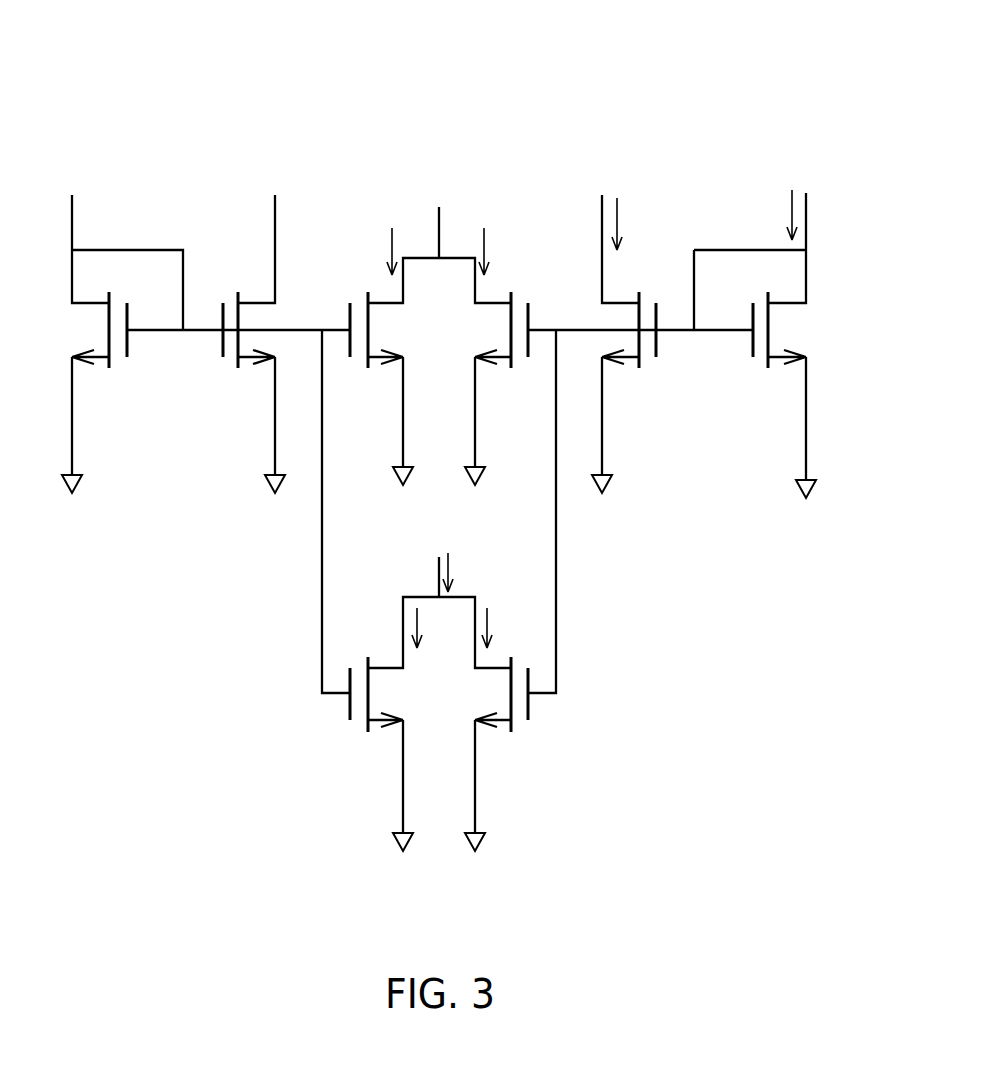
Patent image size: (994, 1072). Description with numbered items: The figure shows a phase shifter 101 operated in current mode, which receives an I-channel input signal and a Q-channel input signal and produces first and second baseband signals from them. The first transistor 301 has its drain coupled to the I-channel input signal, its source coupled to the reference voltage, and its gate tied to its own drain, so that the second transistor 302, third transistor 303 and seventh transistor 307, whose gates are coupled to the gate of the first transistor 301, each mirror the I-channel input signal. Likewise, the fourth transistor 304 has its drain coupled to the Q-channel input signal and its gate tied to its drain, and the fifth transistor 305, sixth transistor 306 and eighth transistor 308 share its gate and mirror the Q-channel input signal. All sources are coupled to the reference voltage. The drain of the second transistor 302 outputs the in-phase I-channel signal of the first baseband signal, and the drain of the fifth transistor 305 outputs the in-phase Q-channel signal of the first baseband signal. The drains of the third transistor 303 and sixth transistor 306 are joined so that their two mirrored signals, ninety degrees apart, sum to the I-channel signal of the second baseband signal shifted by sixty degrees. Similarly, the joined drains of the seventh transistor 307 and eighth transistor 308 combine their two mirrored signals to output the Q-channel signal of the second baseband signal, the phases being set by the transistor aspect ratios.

The phase shifter 101 is at (714, 96).
The first transistor 301 is at (112, 340).
The second transistor 302 is at (263, 326).
The third transistor 303 is at (400, 329).
The fourth transistor 304 is at (758, 329).
The fifth transistor 305 is at (619, 327).
The sixth transistor 306 is at (496, 354).
The seventh transistor 307 is at (406, 701).
The eighth transistor 308 is at (499, 714).